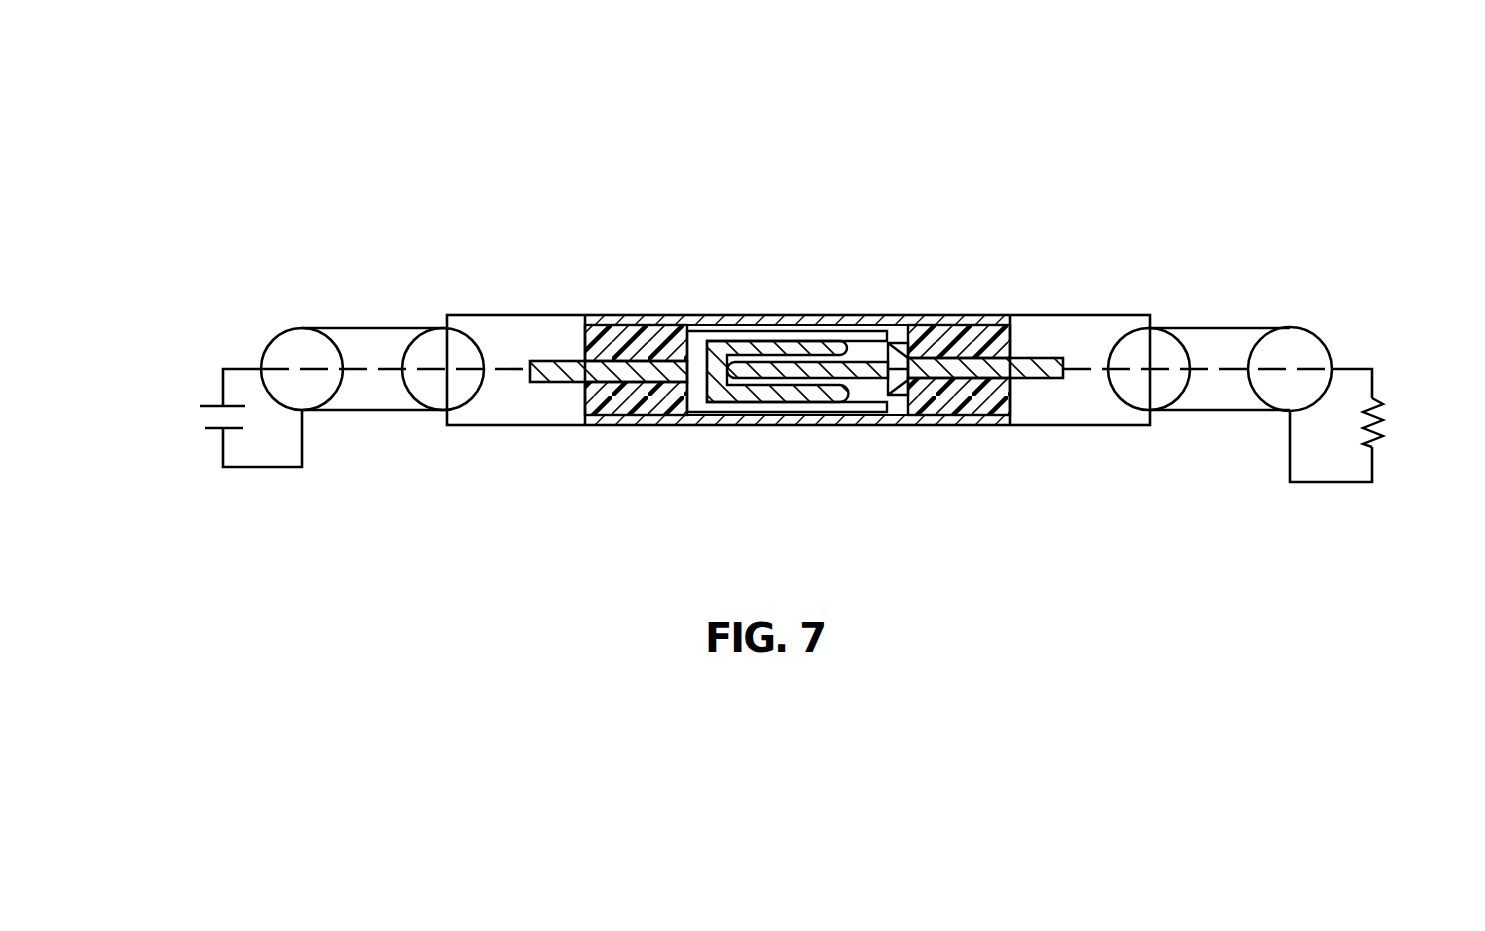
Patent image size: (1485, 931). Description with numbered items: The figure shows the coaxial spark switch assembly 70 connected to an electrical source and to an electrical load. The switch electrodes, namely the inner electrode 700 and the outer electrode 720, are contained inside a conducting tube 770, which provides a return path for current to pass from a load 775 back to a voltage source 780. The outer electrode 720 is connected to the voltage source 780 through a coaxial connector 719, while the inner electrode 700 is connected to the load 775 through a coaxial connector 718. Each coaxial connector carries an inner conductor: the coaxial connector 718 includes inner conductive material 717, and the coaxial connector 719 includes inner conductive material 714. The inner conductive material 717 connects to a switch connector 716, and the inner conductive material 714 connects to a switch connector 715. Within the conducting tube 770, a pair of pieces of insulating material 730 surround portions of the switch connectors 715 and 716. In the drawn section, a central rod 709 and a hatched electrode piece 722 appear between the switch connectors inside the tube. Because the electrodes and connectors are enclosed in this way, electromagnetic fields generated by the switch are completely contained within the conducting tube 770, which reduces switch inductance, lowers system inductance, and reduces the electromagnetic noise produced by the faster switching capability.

The spark gap switch assembly 70 is at (234, 62).
The inner electrode 700 is at (900, 382).
The center electrode rod 709 is at (757, 352).
The inner conductor material 714 is at (248, 370).
The switch connector 715 is at (548, 368).
The switch connector 716 is at (1055, 360).
The inner conductor material 717 is at (1347, 367).
The coaxial connector 718 is at (1225, 343).
The coaxial connector 719 is at (373, 352).
The outer electrode 720 is at (720, 402).
The electrode 722 is at (805, 405).
The insulating material 730 is at (633, 338).
The conducting tube 770 is at (537, 315).
The load 775 is at (1385, 420).
The voltage source 780 is at (207, 430).